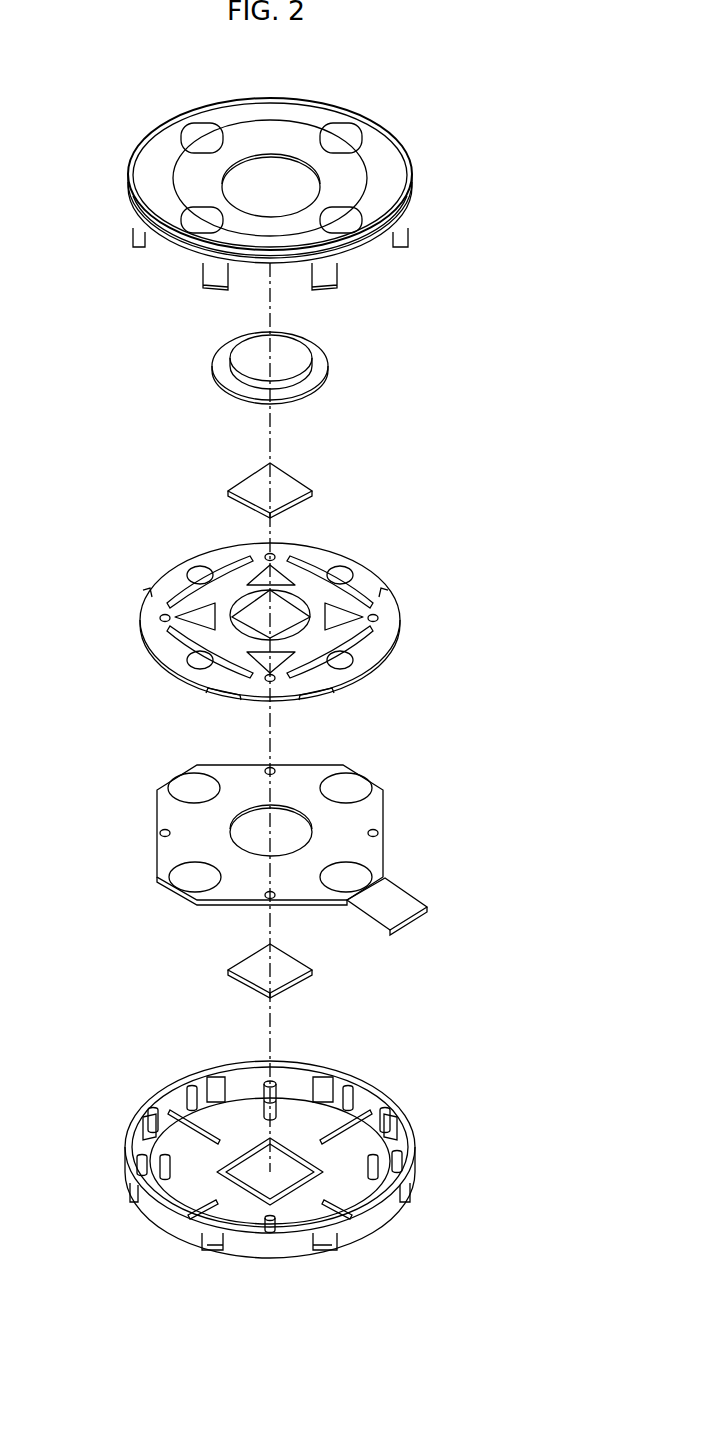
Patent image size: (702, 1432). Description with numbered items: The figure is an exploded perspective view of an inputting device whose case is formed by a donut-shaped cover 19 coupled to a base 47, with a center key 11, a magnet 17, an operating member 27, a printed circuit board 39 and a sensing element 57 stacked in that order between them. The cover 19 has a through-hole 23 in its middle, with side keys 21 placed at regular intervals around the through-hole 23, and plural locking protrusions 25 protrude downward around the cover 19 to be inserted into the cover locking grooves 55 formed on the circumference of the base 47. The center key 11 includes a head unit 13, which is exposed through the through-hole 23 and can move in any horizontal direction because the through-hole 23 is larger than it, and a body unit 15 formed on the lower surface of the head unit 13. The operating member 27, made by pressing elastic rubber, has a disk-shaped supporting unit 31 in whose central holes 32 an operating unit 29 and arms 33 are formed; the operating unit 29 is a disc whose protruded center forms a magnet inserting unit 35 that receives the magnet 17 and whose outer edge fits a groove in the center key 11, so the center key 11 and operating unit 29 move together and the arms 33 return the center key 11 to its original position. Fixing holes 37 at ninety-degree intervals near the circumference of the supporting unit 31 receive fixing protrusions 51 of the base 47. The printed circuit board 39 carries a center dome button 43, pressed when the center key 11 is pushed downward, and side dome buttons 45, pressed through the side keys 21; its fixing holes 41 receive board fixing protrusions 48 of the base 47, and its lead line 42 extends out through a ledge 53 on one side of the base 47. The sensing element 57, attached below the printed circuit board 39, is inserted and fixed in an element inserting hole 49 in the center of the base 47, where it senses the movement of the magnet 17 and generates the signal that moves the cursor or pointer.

The center key 11 is at (299, 367).
The head unit 13 is at (240, 353).
The body unit 15 is at (313, 385).
The magnet 17 is at (293, 483).
The cover 19 is at (284, 181).
The side keys 21 is at (340, 132).
The through-hole 23 is at (260, 173).
The locking protrusions 25 is at (333, 273).
The operating member 27 is at (280, 611).
The operating unit 29 is at (247, 572).
The supporting unit 31 is at (165, 585).
The holes 32 is at (310, 572).
The arms 33 is at (307, 660).
The magnet inserting unit 35 is at (290, 617).
The fixing holes 37 is at (380, 618).
The printed circuit board 39 is at (291, 829).
The fixing holes 41 is at (265, 770).
The lead line 42 is at (405, 895).
The center dome button 43 is at (285, 848).
The side dome buttons 45 is at (360, 788).
The base 47 is at (265, 1166).
The board fixing protrusions 48 is at (393, 1127).
The element inserting hole 49 is at (258, 1185).
The fixing protrusions 51 is at (265, 1080).
The ledge 53 is at (377, 1220).
The cover locking grooves 55 is at (213, 1087).
The sensing element 57 is at (298, 968).